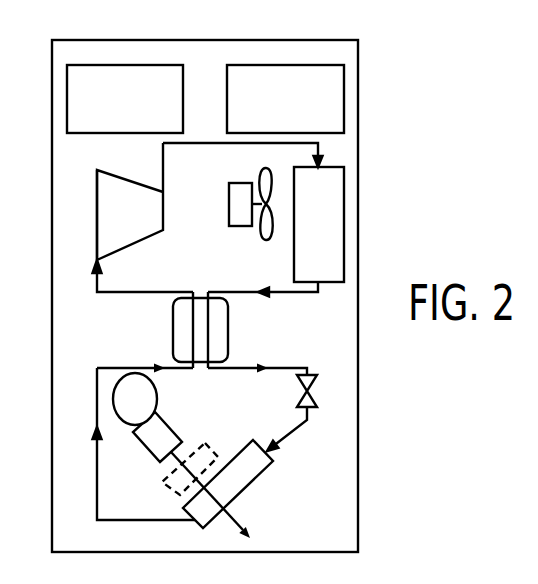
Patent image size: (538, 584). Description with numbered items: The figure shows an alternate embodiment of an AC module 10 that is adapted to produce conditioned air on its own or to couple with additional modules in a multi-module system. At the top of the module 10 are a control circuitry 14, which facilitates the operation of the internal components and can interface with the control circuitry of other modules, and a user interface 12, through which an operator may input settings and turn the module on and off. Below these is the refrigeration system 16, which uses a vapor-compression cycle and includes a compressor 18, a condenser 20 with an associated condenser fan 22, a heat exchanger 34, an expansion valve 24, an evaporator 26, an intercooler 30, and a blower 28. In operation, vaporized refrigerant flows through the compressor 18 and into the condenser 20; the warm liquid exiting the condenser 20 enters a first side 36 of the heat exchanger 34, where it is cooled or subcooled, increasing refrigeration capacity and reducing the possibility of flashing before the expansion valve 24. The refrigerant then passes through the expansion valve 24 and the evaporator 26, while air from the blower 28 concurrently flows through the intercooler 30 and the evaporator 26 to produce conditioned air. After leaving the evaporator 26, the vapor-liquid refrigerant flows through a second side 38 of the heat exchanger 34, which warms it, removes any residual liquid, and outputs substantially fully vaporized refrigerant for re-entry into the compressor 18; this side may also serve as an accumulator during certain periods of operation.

The AC module 10 is at (345, 40).
The user interface 12 is at (344, 97).
The control circuitry 14 is at (67, 97).
The refrigeration system 16 is at (124, 160).
The compressor 18 is at (128, 245).
The condenser 20 is at (344, 225).
The condenser fan 22 is at (248, 167).
The expansion valve 24 is at (316, 386).
The evaporator 26 is at (263, 472).
The blower 28 is at (157, 403).
The intercooler 30 is at (167, 490).
The heat exchanger 34 is at (228, 327).
The first side 36 is at (240, 298).
The second side 38 is at (160, 298).